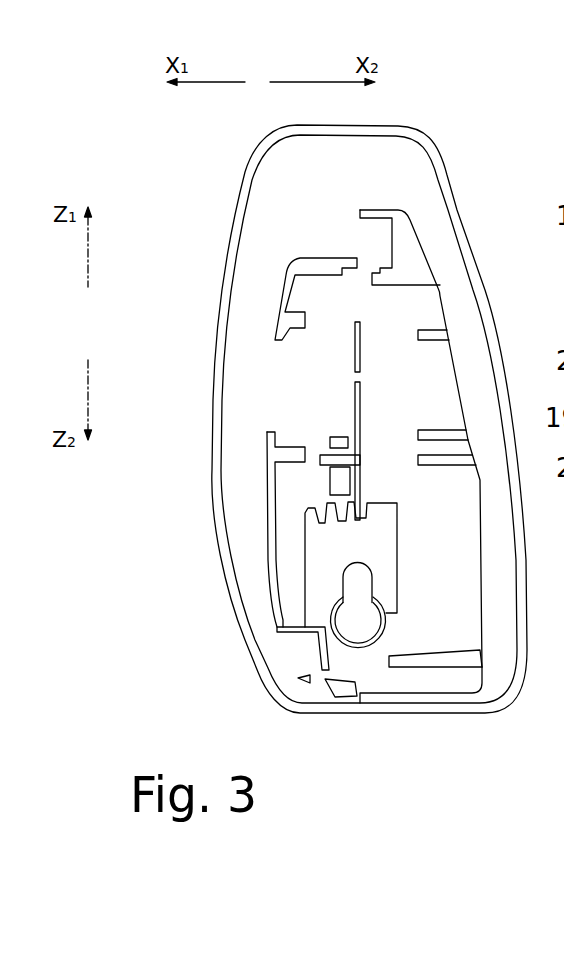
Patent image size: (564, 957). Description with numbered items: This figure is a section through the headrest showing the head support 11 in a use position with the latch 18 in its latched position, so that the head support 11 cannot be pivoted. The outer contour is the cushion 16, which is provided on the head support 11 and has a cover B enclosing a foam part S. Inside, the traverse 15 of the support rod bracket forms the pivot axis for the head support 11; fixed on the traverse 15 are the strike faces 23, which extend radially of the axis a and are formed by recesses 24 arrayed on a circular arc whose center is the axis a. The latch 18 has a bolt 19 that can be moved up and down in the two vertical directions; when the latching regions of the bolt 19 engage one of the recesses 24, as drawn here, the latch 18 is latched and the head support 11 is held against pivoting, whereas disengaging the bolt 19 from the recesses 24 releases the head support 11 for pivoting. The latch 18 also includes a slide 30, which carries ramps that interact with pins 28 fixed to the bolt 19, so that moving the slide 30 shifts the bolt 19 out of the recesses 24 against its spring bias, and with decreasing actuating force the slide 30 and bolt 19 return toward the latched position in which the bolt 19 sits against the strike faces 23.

The cover B is at (400, 118).
The foam part S is at (293, 207).
The cushion 16 is at (445, 240).
The head support 11 is at (285, 300).
The bolt 19 is at (353, 338).
The latch 18 is at (323, 390).
The slide 30 is at (340, 482).
The pins 28 is at (332, 462).
The recesses 24 is at (322, 525).
The strike faces 23 is at (327, 563).
The traverse 15 is at (343, 618).
The axis a is at (362, 618).